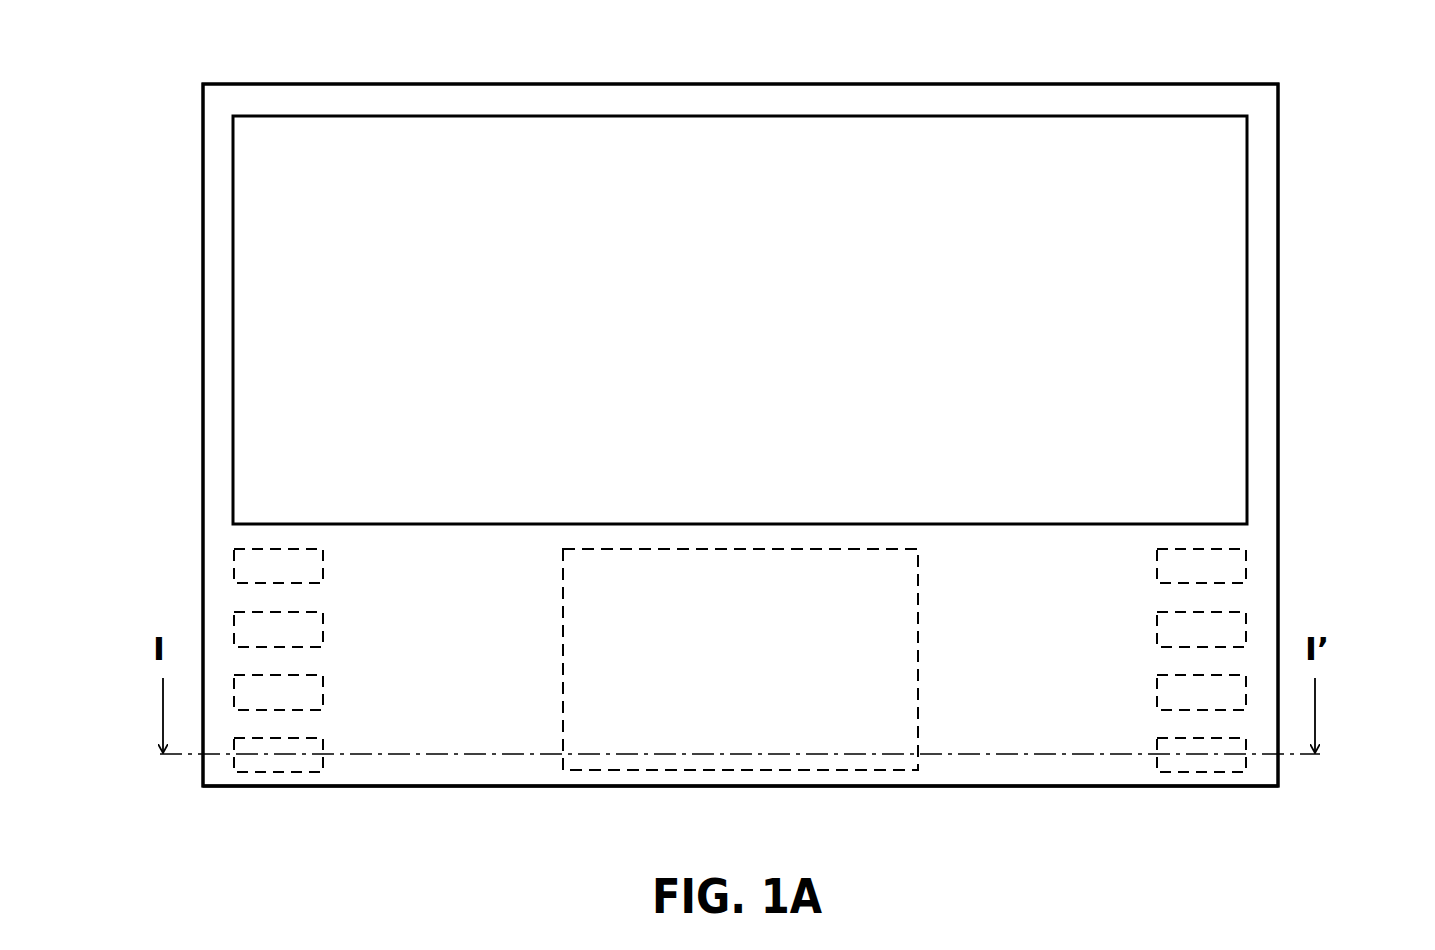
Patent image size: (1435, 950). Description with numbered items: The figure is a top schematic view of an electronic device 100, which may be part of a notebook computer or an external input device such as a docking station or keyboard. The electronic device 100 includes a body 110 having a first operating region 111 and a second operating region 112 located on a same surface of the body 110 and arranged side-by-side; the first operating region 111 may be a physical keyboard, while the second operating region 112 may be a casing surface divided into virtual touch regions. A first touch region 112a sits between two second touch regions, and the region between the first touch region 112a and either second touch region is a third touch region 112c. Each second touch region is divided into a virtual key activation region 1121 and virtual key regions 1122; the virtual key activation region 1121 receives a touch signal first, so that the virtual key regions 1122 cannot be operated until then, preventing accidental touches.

The electronic device 100 is at (176, 58).
The body 110 is at (1140, 103).
The first operating region 111 is at (753, 207).
The second operating region 112 is at (1373, 30).
The first touch region 112a is at (741, 772).
The third touch region 112c is at (445, 705).
The virtual key activation region 1121 is at (288, 773).
The virtual key region 1122 is at (234, 690).